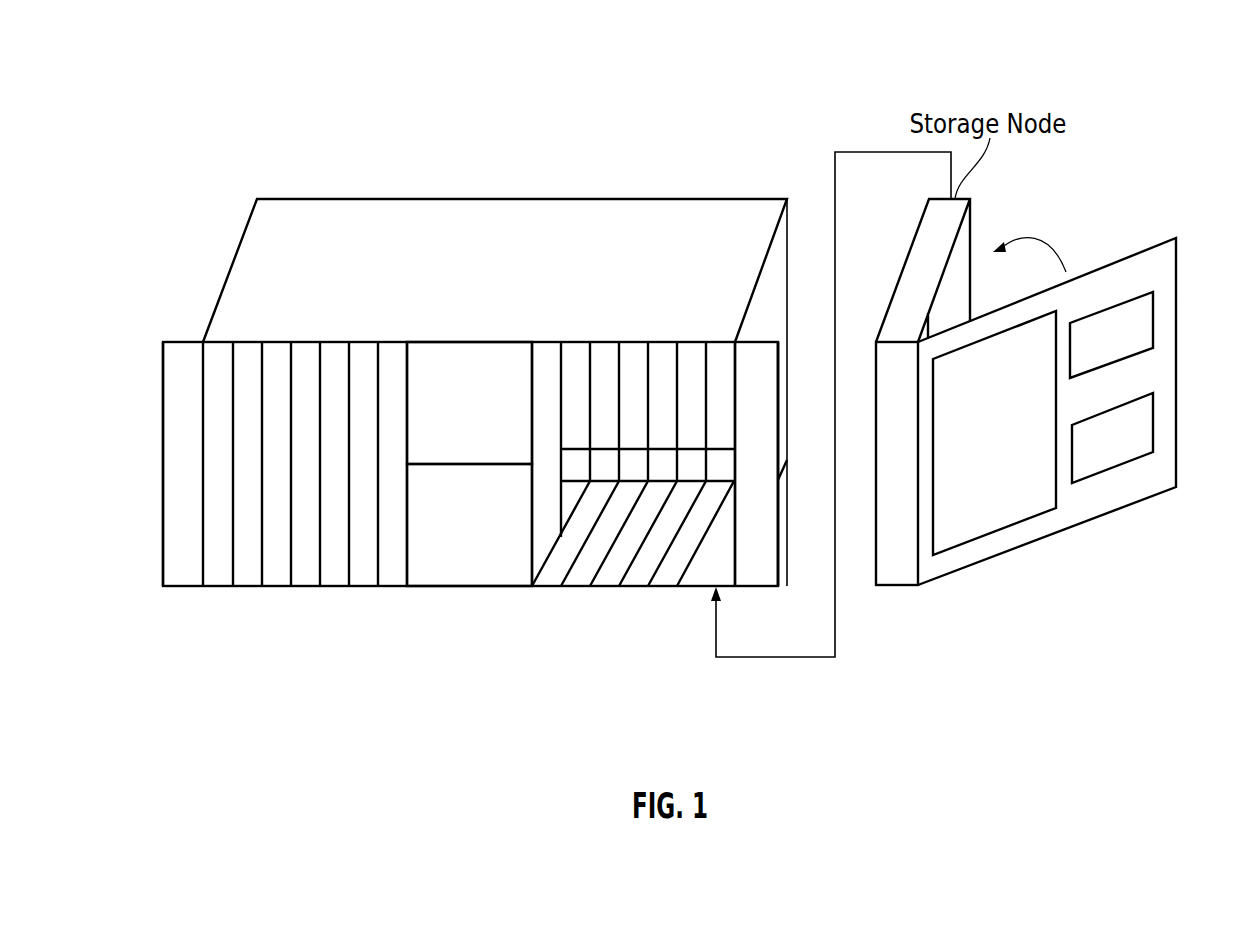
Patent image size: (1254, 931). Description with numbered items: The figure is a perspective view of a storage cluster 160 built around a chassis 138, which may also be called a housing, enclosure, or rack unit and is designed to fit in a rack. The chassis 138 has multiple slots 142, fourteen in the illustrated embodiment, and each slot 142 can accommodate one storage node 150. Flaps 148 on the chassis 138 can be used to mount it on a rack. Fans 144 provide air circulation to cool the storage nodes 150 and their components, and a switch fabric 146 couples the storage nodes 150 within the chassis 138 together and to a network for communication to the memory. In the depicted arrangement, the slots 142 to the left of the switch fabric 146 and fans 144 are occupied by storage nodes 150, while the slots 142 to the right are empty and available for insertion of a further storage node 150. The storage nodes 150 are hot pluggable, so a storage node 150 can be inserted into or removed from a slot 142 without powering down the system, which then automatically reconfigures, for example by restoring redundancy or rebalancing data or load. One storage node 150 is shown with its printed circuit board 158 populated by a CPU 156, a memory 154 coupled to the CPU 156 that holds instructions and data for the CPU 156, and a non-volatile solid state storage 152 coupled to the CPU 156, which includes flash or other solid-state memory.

The chassis 138 is at (328, 198).
The slots 142 is at (700, 588).
The fans 144 is at (468, 590).
The switch fabric 146 is at (475, 341).
The flaps 148 is at (163, 465).
The storage nodes 150 is at (217, 590).
The non-volatile solid state storage 152 is at (992, 532).
The memory 154 is at (1113, 303).
The CPU 156 is at (1155, 422).
The printed circuit board 158 is at (1086, 417).
The storage cluster 160 is at (525, 377).